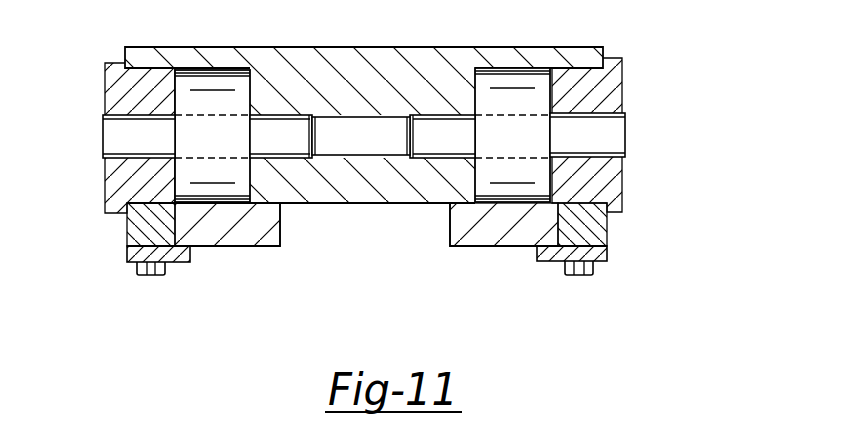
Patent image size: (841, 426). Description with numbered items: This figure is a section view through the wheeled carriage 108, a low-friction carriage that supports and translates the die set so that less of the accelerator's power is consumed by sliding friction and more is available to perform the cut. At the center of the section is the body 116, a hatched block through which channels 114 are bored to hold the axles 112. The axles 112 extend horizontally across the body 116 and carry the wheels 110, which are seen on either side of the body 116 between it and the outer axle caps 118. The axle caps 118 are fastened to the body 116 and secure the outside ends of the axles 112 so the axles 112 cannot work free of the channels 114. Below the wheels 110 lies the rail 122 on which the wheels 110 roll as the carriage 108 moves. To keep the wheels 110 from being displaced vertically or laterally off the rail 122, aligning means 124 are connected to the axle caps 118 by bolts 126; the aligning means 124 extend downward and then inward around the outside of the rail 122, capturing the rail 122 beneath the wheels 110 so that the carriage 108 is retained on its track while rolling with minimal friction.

The wheeled carriage 108 is at (631, 78).
The wheels 110 is at (463, 178).
The axles 112 is at (430, 160).
The channels 114 is at (385, 122).
The body 116 is at (322, 47).
The axle caps 118 is at (105, 82).
The rail 122 is at (465, 246).
The aligning means 124 is at (127, 248).
The bolts 126 is at (145, 277).